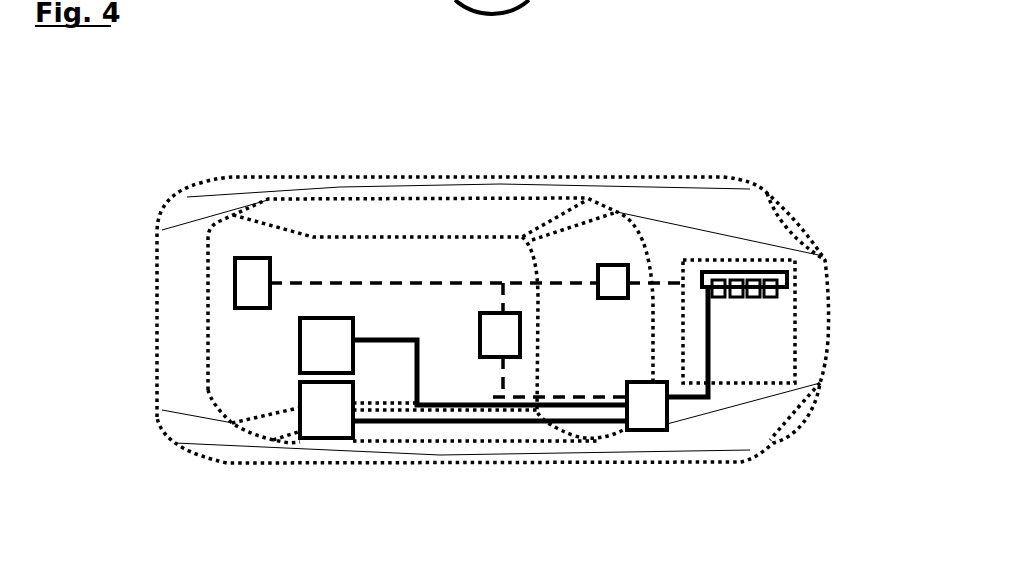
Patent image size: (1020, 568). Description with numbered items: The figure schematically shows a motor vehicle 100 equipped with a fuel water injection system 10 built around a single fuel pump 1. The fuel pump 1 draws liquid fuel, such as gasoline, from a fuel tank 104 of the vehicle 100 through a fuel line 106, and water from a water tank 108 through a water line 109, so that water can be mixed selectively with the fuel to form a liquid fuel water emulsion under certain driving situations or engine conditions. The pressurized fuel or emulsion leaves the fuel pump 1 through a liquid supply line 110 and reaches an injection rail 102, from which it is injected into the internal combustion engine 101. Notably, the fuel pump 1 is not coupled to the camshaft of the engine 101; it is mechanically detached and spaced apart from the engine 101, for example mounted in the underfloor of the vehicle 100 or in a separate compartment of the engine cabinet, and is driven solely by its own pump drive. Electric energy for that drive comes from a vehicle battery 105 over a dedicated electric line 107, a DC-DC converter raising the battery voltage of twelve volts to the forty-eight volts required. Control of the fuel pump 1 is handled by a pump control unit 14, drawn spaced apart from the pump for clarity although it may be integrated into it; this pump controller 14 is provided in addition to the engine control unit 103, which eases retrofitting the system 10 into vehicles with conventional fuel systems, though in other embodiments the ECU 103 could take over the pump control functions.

The fuel pump 1 is at (645, 433).
The fuel water injection system 10 is at (748, 413).
The pump control unit 14 is at (505, 312).
The motor vehicle 100 is at (122, 124).
The internal combustion engine 101 is at (787, 332).
The injection rail 102 is at (760, 273).
The engine control unit (ECU) 103 is at (617, 267).
The fuel tank 104 is at (323, 407).
The vehicle battery 105 is at (252, 267).
The fuel line 106 is at (453, 425).
The electric line 107 is at (385, 283).
The water tank 108 is at (313, 330).
The water line 109 is at (417, 338).
The liquid supply line 110 is at (690, 403).